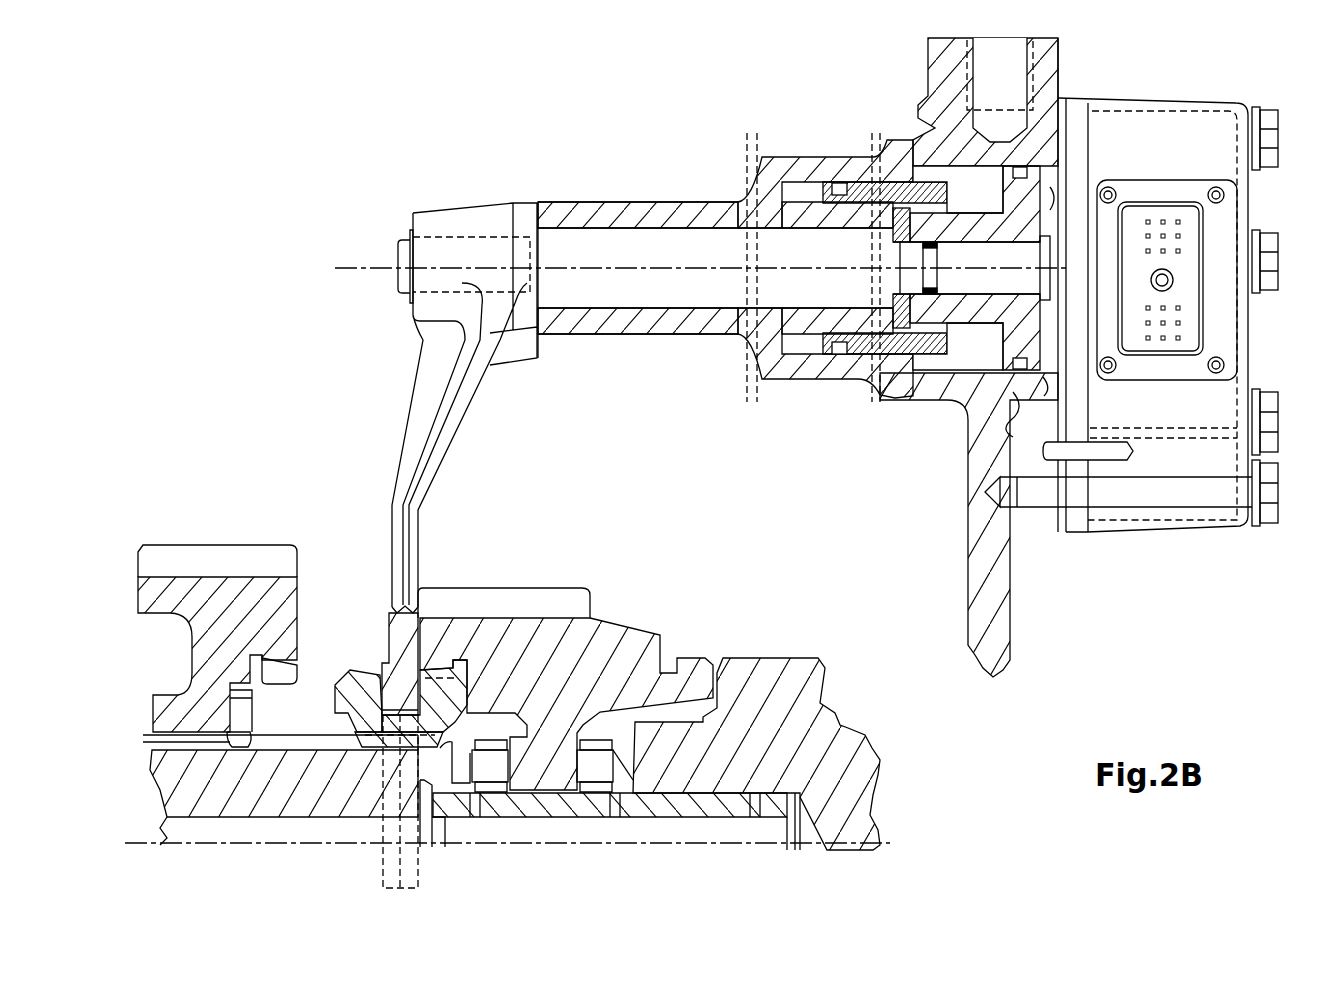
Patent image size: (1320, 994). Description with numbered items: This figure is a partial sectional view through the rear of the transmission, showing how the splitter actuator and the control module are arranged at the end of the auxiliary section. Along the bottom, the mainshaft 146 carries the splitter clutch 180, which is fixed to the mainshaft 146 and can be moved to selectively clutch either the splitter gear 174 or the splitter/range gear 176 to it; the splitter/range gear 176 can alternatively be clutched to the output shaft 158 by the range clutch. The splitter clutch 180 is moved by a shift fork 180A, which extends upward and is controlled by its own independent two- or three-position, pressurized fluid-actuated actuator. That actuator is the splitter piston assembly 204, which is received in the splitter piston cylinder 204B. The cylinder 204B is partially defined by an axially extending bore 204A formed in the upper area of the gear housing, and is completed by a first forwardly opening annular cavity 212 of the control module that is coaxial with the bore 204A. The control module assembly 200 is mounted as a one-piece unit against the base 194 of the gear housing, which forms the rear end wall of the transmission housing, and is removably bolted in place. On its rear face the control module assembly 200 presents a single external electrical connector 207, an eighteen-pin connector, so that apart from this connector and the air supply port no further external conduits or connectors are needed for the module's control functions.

The splitter piston assembly 204 is at (941, 158).
The bore 204A is at (647, 306).
The cylinder 204B is at (936, 363).
The first forwardly opening annular cavity 212 is at (1060, 187).
The external electrical connector 207 is at (1183, 293).
The control module assembly 200 is at (1182, 548).
The base 194 is at (1022, 397).
The shift fork 180A is at (420, 487).
The splitter clutch 180 is at (377, 655).
The splitter gear 174 is at (223, 569).
The splitter/range gear 176 is at (520, 611).
The mainshaft 146 is at (306, 800).
The output shaft 158 is at (852, 771).